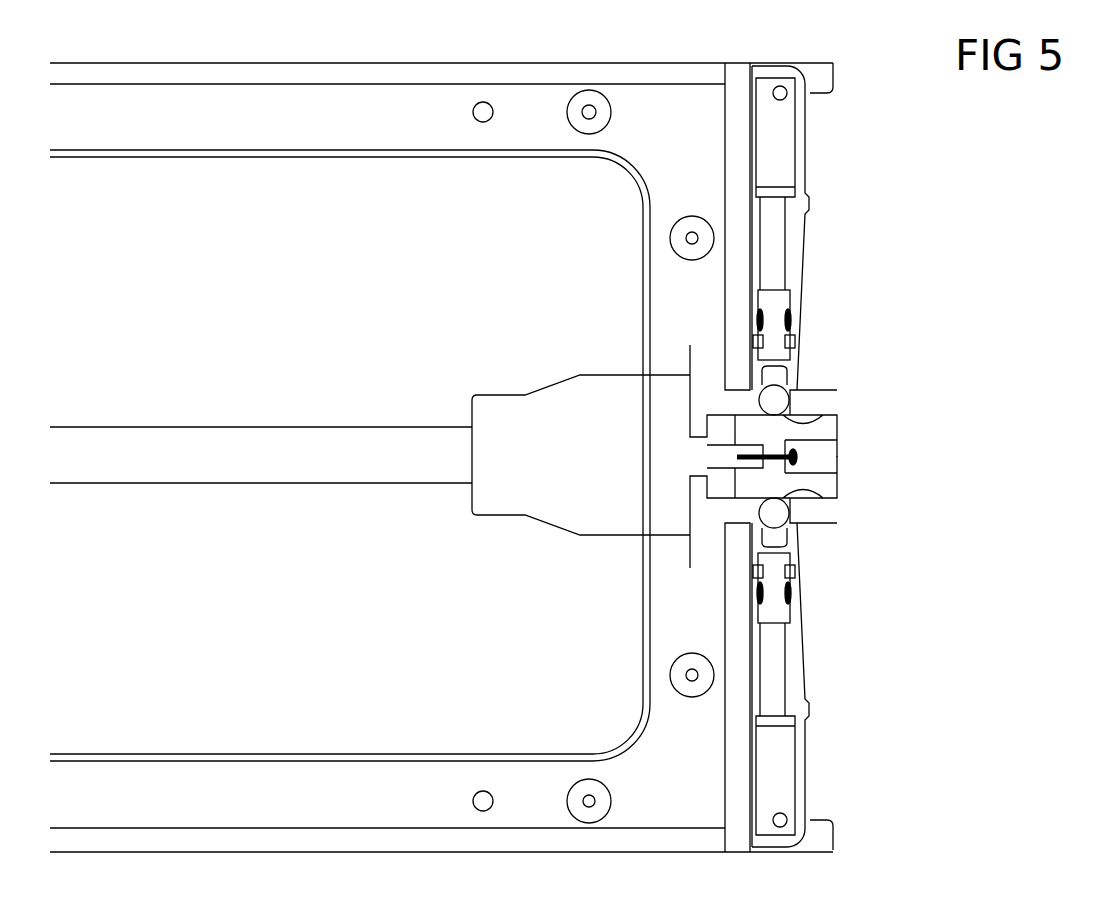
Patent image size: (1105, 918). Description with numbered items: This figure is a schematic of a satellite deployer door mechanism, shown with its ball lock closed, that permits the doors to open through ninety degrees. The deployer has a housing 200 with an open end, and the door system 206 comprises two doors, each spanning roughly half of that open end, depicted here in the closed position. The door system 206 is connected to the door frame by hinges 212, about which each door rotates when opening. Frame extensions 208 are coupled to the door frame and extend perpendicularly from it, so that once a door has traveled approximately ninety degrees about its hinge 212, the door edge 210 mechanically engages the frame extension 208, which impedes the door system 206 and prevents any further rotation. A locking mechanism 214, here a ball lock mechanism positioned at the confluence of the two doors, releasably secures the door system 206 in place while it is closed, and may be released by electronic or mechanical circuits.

The housing 200 is at (180, 613).
The door system 206 is at (793, 232).
The frame extension 208 is at (816, 75).
The door edge 210 is at (806, 127).
The hinge 212 is at (786, 96).
The locking mechanism 214 is at (812, 457).